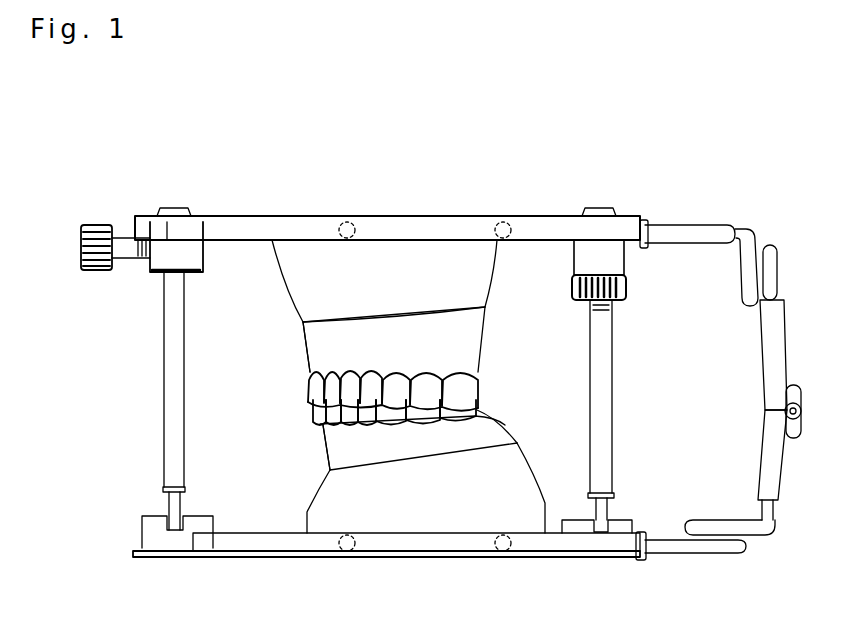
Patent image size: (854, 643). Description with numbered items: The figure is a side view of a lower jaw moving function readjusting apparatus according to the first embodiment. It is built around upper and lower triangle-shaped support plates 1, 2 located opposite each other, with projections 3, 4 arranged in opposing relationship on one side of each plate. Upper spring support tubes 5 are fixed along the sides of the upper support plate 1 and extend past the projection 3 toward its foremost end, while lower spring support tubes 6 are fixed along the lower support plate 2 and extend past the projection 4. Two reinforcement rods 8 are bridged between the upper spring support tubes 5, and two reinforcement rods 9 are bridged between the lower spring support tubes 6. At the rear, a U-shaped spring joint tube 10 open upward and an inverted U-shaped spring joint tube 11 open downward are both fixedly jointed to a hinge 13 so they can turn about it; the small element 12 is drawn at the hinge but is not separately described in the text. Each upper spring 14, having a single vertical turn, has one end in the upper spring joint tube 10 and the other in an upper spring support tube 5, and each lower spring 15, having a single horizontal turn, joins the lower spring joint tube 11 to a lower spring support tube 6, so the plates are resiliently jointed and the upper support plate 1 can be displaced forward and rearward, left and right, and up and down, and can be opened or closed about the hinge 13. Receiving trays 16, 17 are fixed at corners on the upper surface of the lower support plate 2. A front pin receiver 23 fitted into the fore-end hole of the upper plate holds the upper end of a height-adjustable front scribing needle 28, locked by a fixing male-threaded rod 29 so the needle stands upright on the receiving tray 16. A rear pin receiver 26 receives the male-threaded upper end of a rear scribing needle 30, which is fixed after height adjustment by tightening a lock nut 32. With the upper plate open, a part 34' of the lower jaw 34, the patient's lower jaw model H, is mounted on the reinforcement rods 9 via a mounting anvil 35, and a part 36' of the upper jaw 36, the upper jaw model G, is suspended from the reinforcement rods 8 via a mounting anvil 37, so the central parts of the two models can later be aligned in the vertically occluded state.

The upper support plate 1 is at (523, 222).
The lower support plate 2 is at (490, 557).
The projection 3 is at (647, 232).
The projection 4 is at (645, 558).
The upper spring support tube 5 is at (700, 235).
The lower spring support tube 6 is at (660, 548).
The reinforcement rod 8 is at (345, 222).
The reinforcement rod 9 is at (345, 553).
The U-shaped spring joint tube 10 is at (778, 325).
The inverted U-shaped spring joint tube 11 is at (780, 477).
The hinge pin 12 is at (801, 413).
The hinge 13 is at (797, 393).
The upper spring 14 is at (778, 254).
The lower spring 15 is at (750, 522).
The receiving tray 16 is at (176, 548).
The receiving tray 17 is at (620, 536).
The front pin receiver 23 is at (202, 264).
The rear pin receiver 26 is at (612, 262).
The front scribing needle 28 is at (186, 400).
The fixing male-threaded rod 29 is at (112, 225).
The rear scribing needle 30 is at (614, 416).
The lock nut 32 is at (622, 292).
The lower jaw 34 is at (450, 440).
The part of lower jaw 34' is at (298, 447).
The mounting anvil 35 is at (410, 518).
The upper jaw 36 is at (422, 339).
The part of upper jaw 36' is at (282, 347).
The mounting anvil 37 is at (398, 255).
The upper jaw model G is at (492, 323).
The lower jaw model H is at (495, 420).